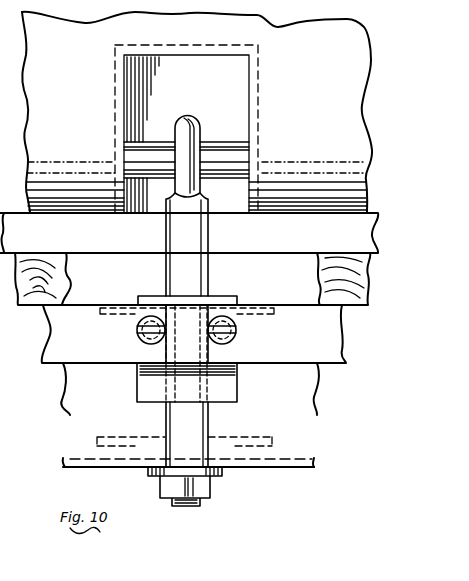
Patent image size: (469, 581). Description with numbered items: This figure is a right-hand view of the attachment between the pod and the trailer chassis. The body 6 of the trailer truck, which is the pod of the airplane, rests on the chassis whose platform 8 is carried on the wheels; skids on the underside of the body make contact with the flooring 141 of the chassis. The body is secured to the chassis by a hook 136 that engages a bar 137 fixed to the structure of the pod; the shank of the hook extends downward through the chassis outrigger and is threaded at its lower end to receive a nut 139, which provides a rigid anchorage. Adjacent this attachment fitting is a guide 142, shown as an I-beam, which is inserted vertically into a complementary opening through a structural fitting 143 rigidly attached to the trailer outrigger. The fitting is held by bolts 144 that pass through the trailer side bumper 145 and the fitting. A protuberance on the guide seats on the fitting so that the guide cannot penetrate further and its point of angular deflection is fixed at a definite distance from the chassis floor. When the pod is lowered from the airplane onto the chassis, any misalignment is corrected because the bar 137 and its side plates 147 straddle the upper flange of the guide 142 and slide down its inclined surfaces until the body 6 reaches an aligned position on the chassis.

The body 6 is at (320, 116).
The platform 8 is at (80, 252).
The hook 136 is at (192, 118).
The bar 137 is at (236, 137).
The nut 139 is at (206, 490).
The flooring 141 is at (356, 283).
The guide 142 is at (195, 233).
The structural fitting 143 is at (239, 386).
The bolt 144 is at (143, 340).
The trailer side bumper 145 is at (344, 343).
The side plate 147 is at (124, 98).